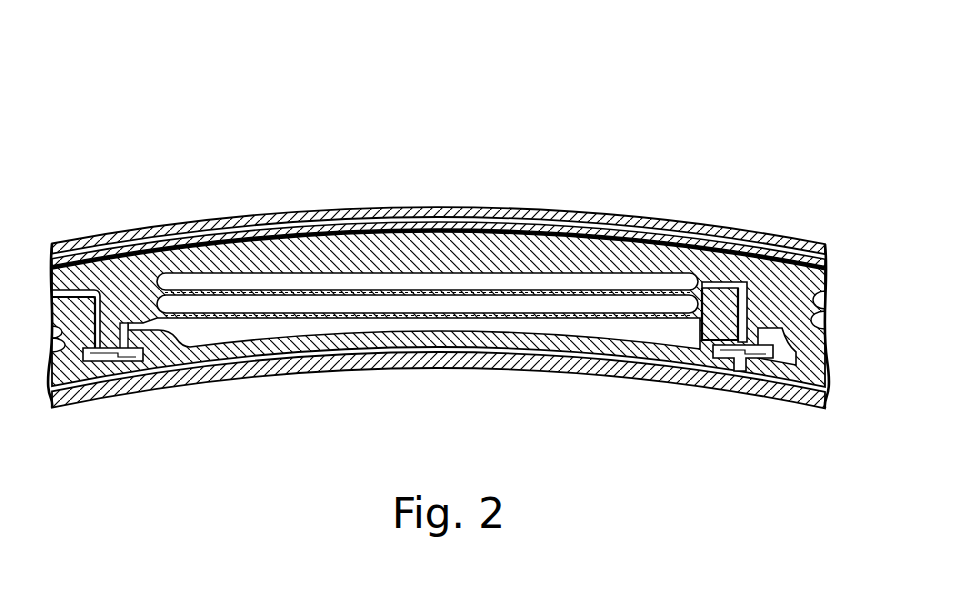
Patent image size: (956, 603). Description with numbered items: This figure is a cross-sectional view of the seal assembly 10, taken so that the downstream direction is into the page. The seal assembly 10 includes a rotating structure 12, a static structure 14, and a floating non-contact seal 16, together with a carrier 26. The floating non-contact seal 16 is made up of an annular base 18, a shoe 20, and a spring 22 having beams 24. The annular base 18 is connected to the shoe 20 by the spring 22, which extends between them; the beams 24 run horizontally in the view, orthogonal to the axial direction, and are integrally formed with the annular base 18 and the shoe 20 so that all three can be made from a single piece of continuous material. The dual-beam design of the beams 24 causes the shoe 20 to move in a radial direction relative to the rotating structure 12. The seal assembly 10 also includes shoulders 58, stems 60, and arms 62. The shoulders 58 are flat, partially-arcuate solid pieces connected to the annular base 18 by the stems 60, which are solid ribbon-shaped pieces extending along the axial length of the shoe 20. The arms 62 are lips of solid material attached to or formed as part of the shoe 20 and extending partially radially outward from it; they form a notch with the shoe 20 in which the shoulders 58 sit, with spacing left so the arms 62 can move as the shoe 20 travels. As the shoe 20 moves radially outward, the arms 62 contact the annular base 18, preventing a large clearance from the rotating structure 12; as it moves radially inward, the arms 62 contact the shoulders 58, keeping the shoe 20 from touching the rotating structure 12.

The seal assembly 10 is at (132, 80).
The rotating structure 12 is at (588, 372).
The static structure 14 is at (400, 208).
The floating non-contact seal 16 is at (128, 274).
The annular base 18 is at (635, 258).
The shoe 20 is at (352, 347).
The spring 22 is at (270, 328).
The beams 24 is at (528, 290).
The carrier 26 is at (103, 248).
The shoulders 58 is at (103, 362).
The stem 60 is at (92, 330).
The arms 62 is at (140, 355).